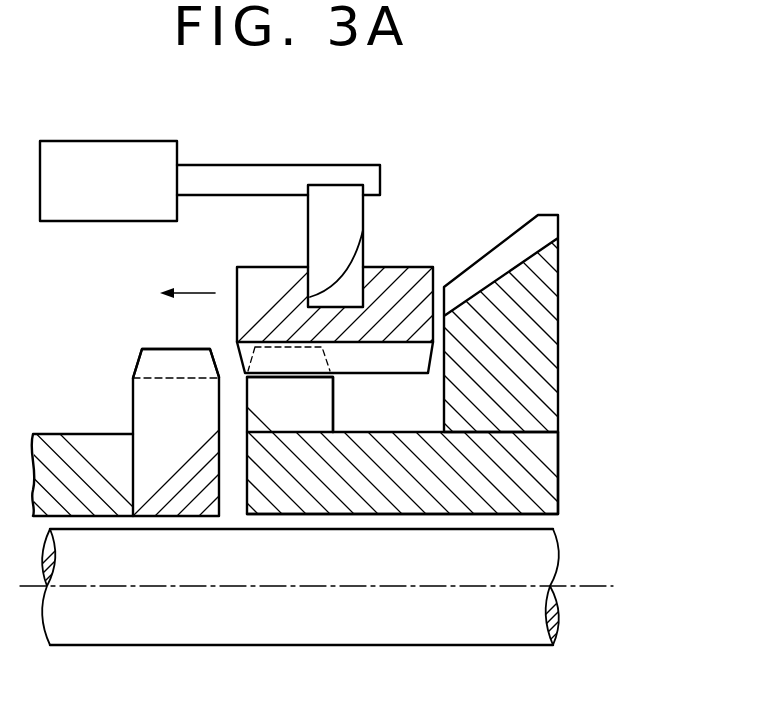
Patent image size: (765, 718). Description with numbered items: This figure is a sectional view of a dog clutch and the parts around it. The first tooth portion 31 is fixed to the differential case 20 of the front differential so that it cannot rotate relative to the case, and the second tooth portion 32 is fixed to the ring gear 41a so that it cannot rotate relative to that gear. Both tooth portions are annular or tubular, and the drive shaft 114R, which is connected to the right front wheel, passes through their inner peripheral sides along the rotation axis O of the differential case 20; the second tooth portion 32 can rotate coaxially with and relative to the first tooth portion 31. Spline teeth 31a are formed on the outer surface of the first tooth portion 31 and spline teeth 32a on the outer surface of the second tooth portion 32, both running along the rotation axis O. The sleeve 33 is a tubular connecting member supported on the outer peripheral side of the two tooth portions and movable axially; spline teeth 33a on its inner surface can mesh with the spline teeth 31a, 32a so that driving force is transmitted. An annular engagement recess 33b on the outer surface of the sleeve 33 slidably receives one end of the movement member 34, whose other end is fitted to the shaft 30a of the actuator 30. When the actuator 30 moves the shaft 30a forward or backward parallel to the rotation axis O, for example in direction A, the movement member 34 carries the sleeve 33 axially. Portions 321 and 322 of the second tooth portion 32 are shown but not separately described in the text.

The differential case 20 is at (73, 442).
The actuator 30 is at (105, 147).
The shaft 30a is at (242, 170).
The first tooth portion 31 is at (145, 413).
The spline teeth 31a is at (167, 365).
The second tooth portion 32 is at (383, 480).
The spline teeth 32a is at (250, 355).
The sleeve 33 is at (373, 273).
The spline teeth 33a is at (372, 365).
The engagement recess 33b is at (362, 247).
The movement member 34 is at (357, 230).
The ring gear 41a is at (553, 332).
The drive shaft 114R is at (463, 633).
The protrusion of slider 321 is at (285, 430).
The base portion of slider 322 is at (553, 480).
The rotation axis O is at (575, 583).
The direction of movement A is at (187, 280).